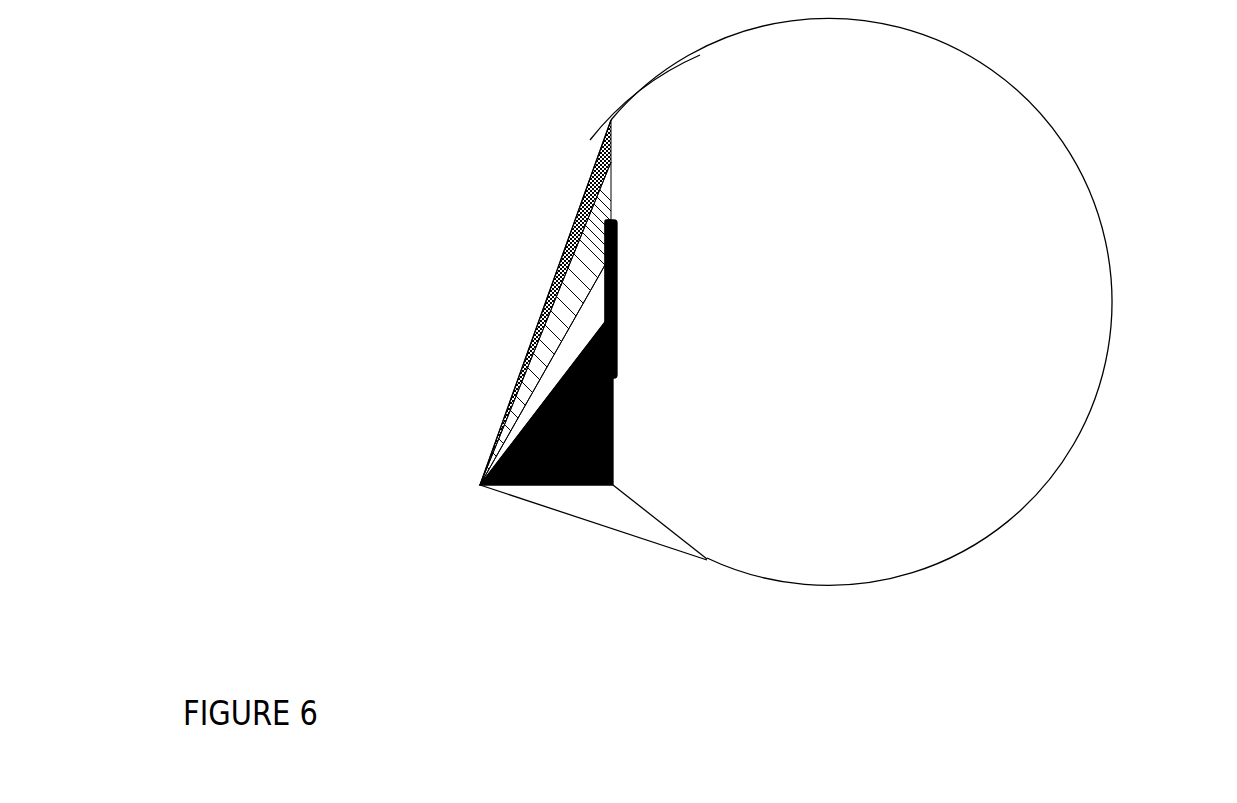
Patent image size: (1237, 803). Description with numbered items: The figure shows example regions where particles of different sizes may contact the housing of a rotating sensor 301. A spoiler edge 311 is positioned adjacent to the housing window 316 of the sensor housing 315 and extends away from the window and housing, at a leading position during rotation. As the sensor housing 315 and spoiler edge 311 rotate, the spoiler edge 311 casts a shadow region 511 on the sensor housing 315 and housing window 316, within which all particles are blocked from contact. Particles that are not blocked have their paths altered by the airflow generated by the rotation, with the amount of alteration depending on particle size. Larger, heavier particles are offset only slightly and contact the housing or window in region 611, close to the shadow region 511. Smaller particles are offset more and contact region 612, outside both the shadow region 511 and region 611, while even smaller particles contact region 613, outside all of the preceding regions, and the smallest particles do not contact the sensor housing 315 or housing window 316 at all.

The sensor 301 is at (1108, 125).
The spoiler edge 311 is at (562, 510).
The sensor housing 315 is at (653, 78).
The housing window 316 is at (597, 236).
The shadow region 511 is at (613, 432).
The region 611 is at (616, 303).
The region 612 is at (612, 203).
The region 613 is at (612, 157).